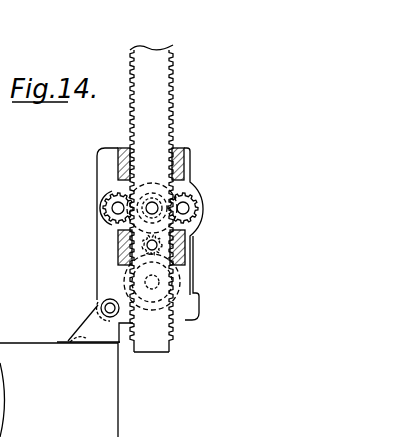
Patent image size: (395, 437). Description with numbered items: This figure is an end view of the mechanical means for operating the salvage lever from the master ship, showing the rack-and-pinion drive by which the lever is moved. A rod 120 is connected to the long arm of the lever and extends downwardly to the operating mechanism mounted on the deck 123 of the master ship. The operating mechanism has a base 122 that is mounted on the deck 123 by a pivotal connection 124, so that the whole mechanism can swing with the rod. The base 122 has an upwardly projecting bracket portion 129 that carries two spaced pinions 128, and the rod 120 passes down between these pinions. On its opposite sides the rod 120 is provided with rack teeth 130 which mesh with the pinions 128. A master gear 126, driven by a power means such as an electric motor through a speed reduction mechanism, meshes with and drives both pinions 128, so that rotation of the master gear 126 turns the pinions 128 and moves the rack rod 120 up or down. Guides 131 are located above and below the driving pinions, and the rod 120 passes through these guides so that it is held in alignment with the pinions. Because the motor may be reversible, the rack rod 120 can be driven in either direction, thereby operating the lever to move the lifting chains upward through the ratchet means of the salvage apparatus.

The rod 120 is at (152, 65).
The rack teeth 130 is at (172, 100).
The guides 131 is at (190, 160).
The base 122 is at (185, 316).
The master gear 126 is at (190, 183).
The pinions 128 is at (202, 217).
The bracket portion 129 is at (193, 275).
The pivotal connection 124 is at (100, 302).
The deck 123 is at (77, 332).